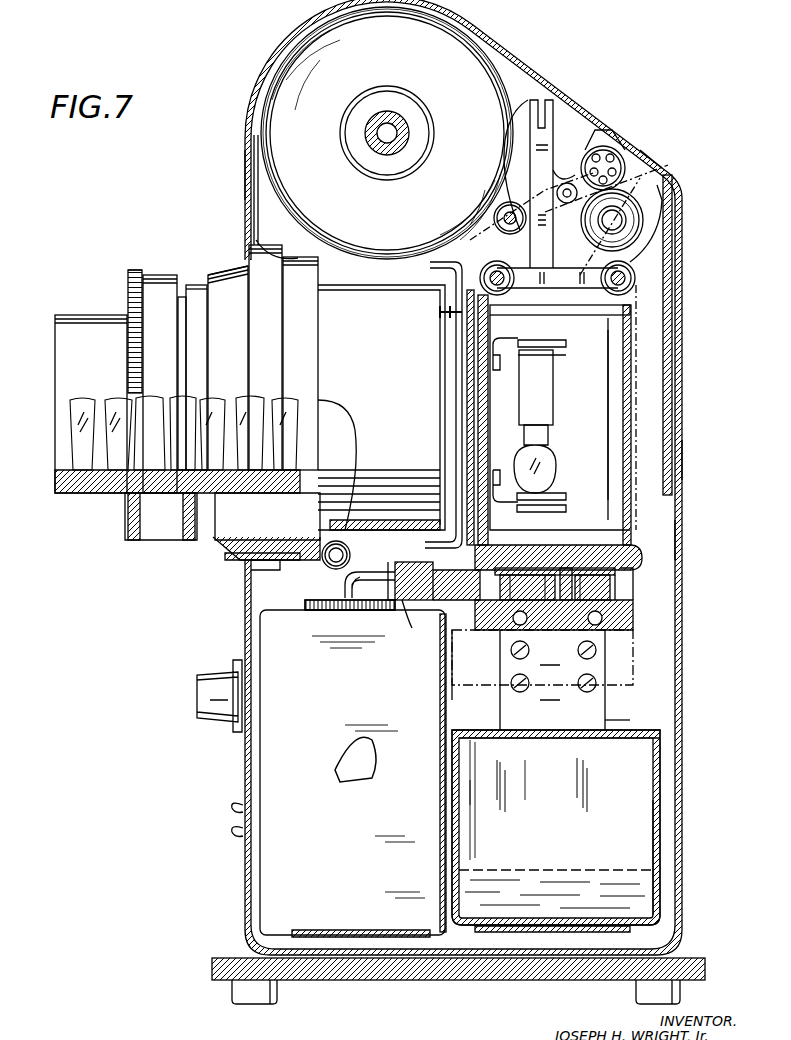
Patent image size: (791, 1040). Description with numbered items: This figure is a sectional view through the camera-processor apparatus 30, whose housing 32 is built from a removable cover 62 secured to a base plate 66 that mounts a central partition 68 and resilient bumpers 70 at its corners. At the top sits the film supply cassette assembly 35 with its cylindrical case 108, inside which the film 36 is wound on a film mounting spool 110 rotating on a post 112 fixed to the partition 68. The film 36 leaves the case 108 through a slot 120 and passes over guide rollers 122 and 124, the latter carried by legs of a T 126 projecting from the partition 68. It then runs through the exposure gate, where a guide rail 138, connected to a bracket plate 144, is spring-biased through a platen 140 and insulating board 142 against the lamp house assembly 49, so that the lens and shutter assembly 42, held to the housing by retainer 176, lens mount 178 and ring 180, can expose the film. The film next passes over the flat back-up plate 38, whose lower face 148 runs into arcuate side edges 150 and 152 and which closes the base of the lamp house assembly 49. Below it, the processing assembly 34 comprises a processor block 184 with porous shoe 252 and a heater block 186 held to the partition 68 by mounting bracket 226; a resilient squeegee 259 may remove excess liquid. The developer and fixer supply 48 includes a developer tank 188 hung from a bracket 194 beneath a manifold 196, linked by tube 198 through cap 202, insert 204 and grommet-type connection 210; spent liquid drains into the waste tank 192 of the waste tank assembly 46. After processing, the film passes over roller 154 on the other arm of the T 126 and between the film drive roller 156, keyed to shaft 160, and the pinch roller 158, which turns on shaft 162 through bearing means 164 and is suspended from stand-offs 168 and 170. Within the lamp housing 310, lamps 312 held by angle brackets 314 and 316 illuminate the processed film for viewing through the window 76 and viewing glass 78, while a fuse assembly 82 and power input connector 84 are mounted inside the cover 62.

The camera-processor apparatus 30 is at (213, 48).
The housing 32 is at (290, 30).
The processing assembly 34 is at (652, 605).
The film supply cassette assembly 35 is at (448, 36).
The film 36 is at (672, 148).
The back-up plate 38 is at (604, 540).
The lens and shutter assembly 42 is at (76, 520).
The waste tank assembly 46 is at (662, 790).
The developer and fixer supply 48 is at (258, 638).
The lamp house assembly 49 is at (634, 308).
The housing cover 62 is at (244, 166).
The base plate 66 is at (414, 980).
The partition 68 is at (668, 540).
The resilient bumpers 70 is at (278, 995).
The window 76 is at (684, 458).
The viewing glass 78 is at (672, 470).
The fuse assembly 82 is at (196, 705).
The electrical power input connector 84 is at (232, 810).
The cylindrical case 108 is at (262, 140).
The film mounting spool 110 is at (346, 118).
The post 112 is at (378, 148).
The slot 120 is at (547, 82).
The guide roller 122 is at (500, 204).
The guide roller 124 is at (478, 270).
The T 126 is at (564, 284).
The guide rail 138 is at (460, 310).
The platen 140 is at (470, 410).
The insulating board 142 is at (480, 440).
The bracket plate 144 is at (430, 264).
The lower face 148 is at (560, 600).
The arcuate marginal side edge 150 is at (470, 578).
The arcuate marginal side edge 152 is at (618, 562).
The roller 154 is at (680, 260).
The film drive roller 156 is at (645, 210).
The pinch roller 158 is at (615, 152).
The shaft 160 is at (606, 235).
The shaft 162 is at (670, 140).
The bearing means 164 is at (590, 165).
The stand-off 168 is at (603, 224).
The stand-off 170 is at (560, 188).
The retainer 176 is at (262, 240).
The lens mount 178 is at (232, 268).
The ring 180 is at (182, 275).
The processor block 184 is at (620, 628).
The heater block 186 is at (622, 678).
The developer tank 188 is at (276, 897).
The waste tank 192 is at (662, 824).
The bracket 194 is at (446, 710).
The manifold 196 is at (418, 560).
The tube 198 is at (345, 581).
The cap 202 is at (304, 600).
The insert 204 is at (338, 612).
The grommet-type connection 210 is at (410, 627).
The mounting bracket 226 is at (600, 716).
The porous shoe 252 is at (540, 568).
The resilient squeegee 259 is at (578, 632).
The lamp housing 310 is at (622, 398).
The lamp 312 is at (553, 408).
The angle bracket 314 is at (506, 345).
The angle bracket 316 is at (516, 505).